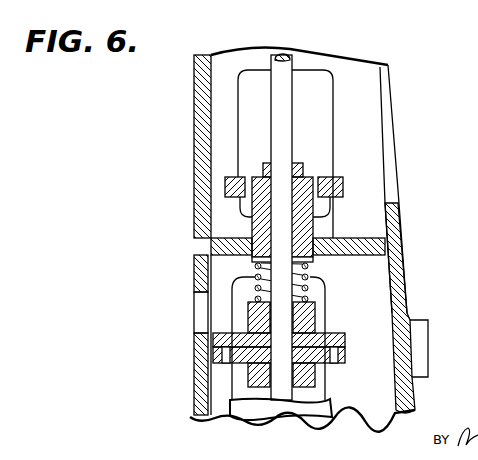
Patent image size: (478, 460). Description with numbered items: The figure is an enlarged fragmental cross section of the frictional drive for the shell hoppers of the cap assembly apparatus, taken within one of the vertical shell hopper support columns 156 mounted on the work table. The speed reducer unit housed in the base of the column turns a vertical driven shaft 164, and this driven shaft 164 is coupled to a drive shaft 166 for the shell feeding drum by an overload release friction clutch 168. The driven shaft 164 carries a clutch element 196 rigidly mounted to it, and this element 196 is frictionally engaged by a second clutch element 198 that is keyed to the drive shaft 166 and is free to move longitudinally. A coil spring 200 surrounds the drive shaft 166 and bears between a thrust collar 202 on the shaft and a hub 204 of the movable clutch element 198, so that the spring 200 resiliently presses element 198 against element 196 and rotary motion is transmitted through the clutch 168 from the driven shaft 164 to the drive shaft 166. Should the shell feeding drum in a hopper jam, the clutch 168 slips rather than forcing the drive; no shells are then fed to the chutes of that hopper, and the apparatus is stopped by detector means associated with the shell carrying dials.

The shell hopper support column 156 is at (190, 121).
The drive shaft 166 is at (297, 146).
The thrust collar 202 is at (253, 261).
The coil spring 200 is at (312, 279).
The hub 204 is at (310, 304).
The friction clutch 168 is at (332, 334).
The clutch element 196 is at (342, 357).
The driven shaft 164 is at (318, 397).
The clutch element 198 is at (222, 332).